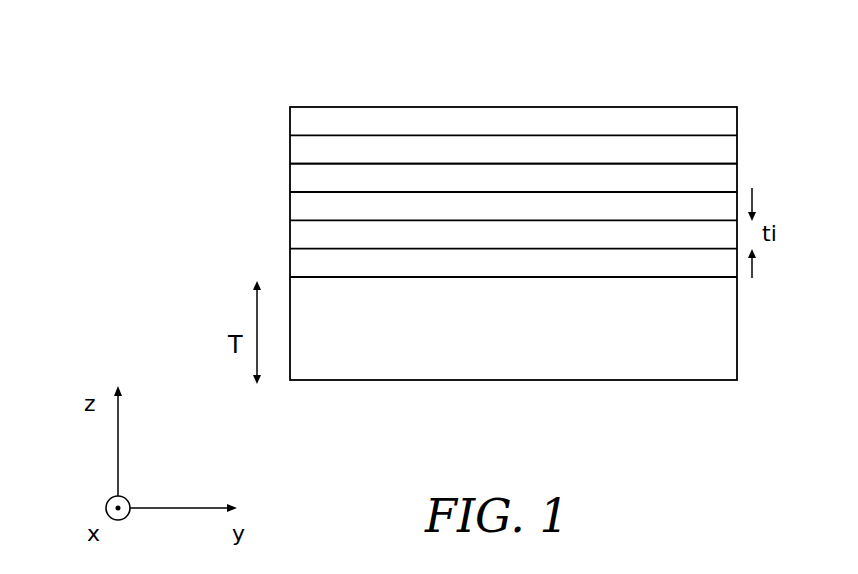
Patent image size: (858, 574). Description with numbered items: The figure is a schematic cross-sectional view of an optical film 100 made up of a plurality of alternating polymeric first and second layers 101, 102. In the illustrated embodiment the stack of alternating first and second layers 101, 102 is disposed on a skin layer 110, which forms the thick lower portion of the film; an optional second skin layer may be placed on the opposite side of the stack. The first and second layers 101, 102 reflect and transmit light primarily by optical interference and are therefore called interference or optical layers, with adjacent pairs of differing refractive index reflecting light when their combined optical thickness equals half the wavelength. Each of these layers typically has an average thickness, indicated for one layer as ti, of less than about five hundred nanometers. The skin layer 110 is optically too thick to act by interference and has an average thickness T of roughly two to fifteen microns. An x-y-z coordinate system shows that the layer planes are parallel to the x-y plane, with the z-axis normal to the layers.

The optical film 100 is at (122, 52).
The first layers 101 is at (723, 117).
The second layers 102 is at (313, 152).
The skin layer 110 is at (712, 325).